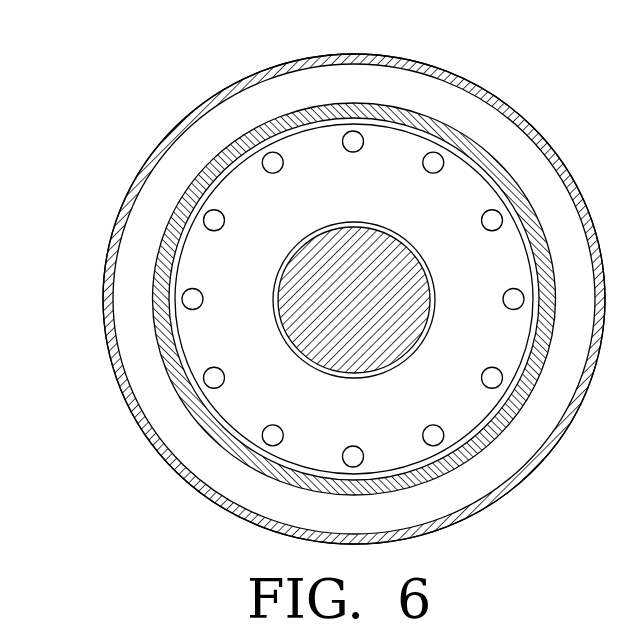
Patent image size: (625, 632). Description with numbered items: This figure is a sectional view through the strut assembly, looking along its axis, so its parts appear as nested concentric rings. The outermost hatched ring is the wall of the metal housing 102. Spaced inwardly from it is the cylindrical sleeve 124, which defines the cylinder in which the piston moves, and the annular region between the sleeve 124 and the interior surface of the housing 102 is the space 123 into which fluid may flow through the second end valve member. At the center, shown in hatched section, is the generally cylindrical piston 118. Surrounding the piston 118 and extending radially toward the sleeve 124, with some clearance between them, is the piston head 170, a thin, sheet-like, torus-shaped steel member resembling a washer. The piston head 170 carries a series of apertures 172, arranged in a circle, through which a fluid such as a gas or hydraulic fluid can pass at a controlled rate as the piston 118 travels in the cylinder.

The housing 102 is at (137, 178).
The piston 118 is at (380, 243).
The space 123 is at (452, 100).
The cylindrical sleeve 124 is at (333, 103).
The piston head 170 is at (502, 383).
The apertures 172 is at (272, 153).